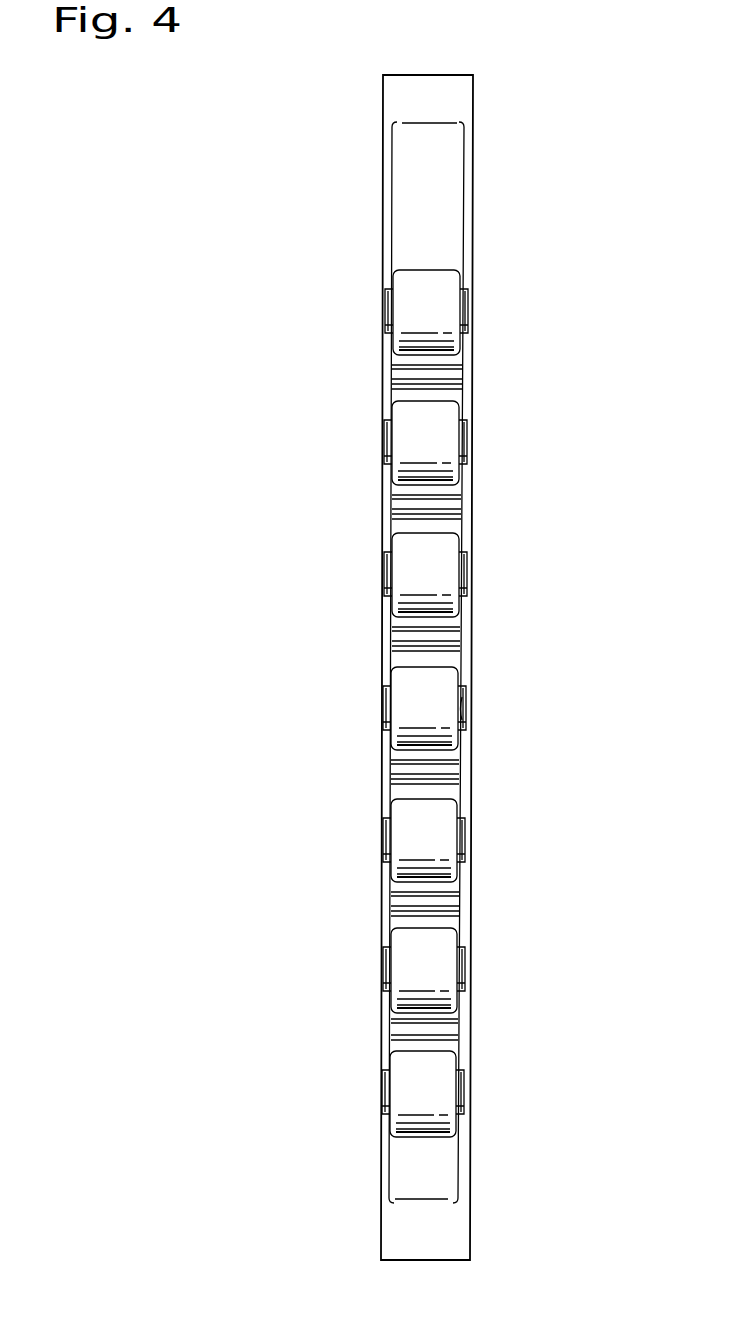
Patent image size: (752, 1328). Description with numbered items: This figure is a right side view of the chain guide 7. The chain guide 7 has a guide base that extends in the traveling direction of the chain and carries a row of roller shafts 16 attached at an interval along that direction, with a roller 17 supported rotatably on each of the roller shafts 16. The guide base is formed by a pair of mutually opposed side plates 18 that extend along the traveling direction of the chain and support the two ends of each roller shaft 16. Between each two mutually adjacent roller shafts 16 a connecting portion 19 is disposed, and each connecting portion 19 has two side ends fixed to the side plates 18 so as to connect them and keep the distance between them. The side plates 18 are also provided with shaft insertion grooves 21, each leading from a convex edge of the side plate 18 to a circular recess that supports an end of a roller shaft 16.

The chain guide 7 is at (376, 92).
The roller shaft 16 is at (386, 313).
The roller 17 is at (448, 285).
The side plate 18 is at (468, 223).
The connecting portion 19 is at (452, 643).
The shaft insertion groove 21 is at (462, 712).